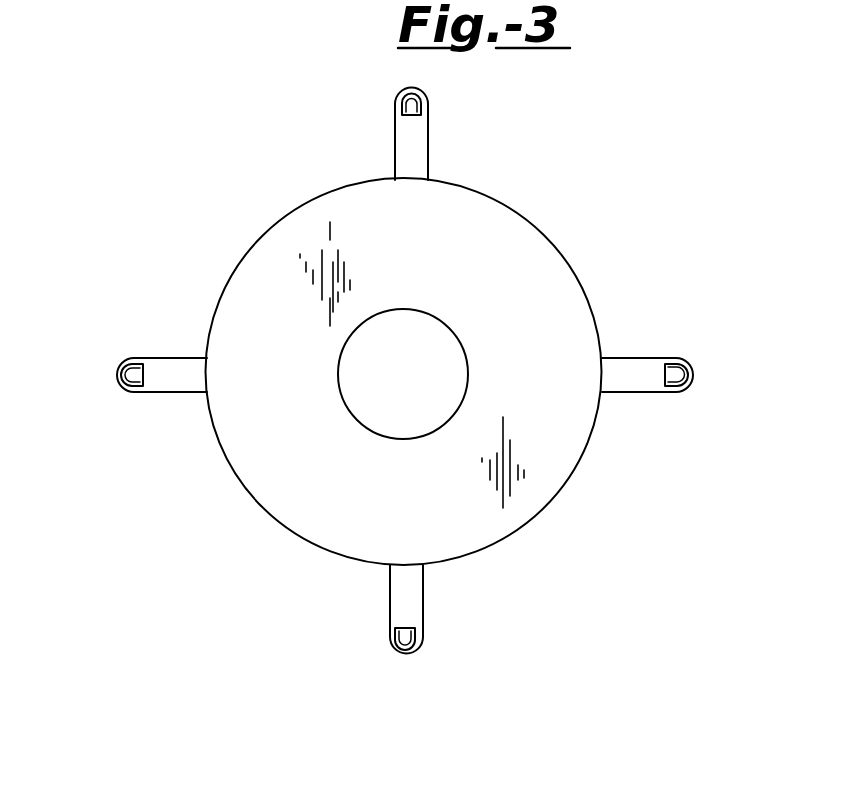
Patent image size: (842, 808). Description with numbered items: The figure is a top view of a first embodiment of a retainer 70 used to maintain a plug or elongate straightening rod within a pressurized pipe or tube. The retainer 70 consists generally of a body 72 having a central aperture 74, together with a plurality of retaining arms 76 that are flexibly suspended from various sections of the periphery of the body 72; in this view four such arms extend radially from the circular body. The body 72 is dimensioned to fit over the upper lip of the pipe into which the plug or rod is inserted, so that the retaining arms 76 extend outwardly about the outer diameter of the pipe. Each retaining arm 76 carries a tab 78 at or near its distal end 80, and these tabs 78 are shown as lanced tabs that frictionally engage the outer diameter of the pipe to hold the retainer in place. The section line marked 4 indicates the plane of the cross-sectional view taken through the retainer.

The retainer 70 is at (420, 398).
The body 72 is at (422, 512).
The central aperture 74 is at (422, 389).
The retaining arms 76 is at (429, 132).
The tabs 78 is at (420, 532).
The distal ends 80 is at (407, 653).
The section line 4- 4 is at (100, 373).